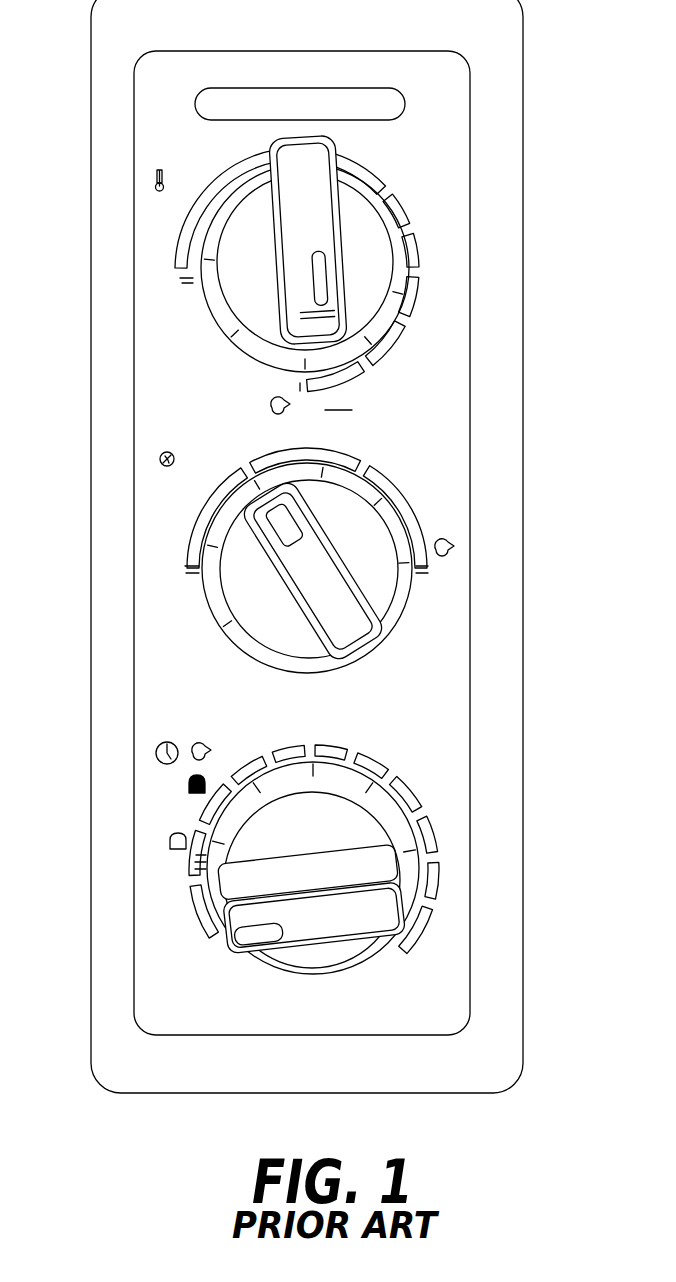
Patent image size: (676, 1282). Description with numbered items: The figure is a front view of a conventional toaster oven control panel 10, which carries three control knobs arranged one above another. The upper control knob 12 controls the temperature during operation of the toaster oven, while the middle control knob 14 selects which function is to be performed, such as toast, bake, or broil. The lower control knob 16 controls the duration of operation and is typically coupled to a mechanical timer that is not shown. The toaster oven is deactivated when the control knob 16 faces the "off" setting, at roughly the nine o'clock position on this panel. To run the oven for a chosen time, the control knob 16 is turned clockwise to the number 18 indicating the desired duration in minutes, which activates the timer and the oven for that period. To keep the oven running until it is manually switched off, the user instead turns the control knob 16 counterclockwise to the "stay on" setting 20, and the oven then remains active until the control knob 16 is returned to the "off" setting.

The control panel 10 is at (134, 104).
The control knob 12 is at (230, 287).
The control knob 14 is at (233, 600).
The control knob 16 is at (311, 832).
The number 18 is at (373, 757).
The "stay on" setting 20 is at (200, 960).